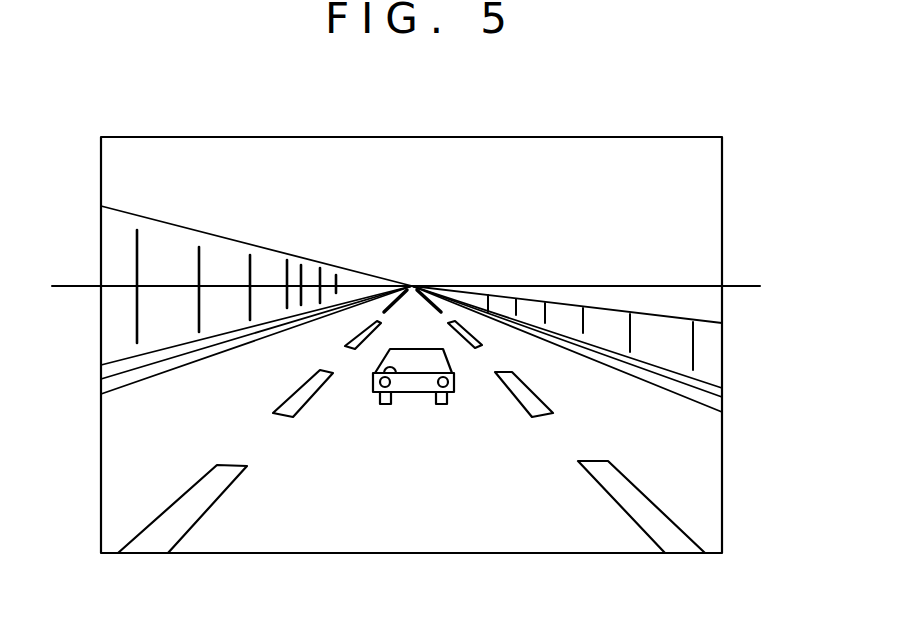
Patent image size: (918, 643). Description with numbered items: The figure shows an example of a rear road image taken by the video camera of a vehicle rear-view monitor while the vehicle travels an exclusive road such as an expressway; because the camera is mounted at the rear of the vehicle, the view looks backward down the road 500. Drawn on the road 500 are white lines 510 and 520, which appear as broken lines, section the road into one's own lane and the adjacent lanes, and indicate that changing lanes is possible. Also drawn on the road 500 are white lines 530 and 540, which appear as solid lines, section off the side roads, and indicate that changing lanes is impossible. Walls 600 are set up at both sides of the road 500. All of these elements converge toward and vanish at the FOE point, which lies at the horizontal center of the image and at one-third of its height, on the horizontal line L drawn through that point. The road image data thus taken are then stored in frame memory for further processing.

The road 500 is at (435, 537).
The white line 510 is at (176, 523).
The white line 520 is at (647, 512).
The white line 530 is at (108, 386).
The white line 540 is at (712, 406).
The wall 600 is at (120, 259).
The FOE point FOE is at (413, 285).
The horizon line L is at (414, 286).